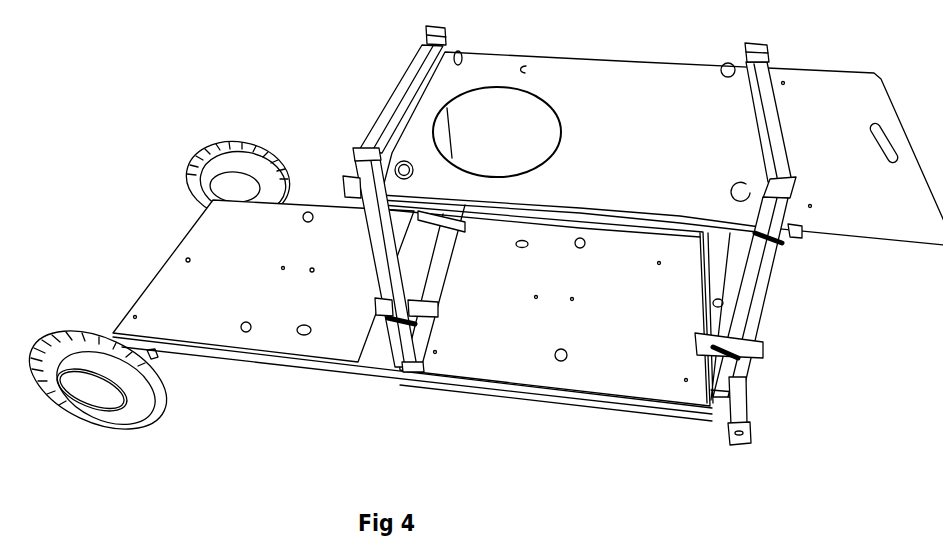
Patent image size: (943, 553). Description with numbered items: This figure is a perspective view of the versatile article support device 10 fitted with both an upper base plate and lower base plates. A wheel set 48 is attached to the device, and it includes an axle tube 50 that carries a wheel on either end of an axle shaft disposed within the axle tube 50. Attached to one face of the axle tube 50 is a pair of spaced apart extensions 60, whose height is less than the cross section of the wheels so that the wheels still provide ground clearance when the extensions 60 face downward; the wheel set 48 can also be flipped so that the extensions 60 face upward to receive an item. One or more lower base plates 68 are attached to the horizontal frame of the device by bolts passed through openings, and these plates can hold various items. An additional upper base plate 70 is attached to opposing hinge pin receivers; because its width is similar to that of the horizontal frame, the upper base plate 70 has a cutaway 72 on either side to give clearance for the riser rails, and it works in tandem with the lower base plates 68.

The versatile article support device 10 is at (412, 408).
The wheel set 48 is at (185, 175).
The axle tube 50 is at (742, 412).
The extensions 60 is at (727, 437).
The base plate 68 is at (218, 322).
The base plate 70 is at (644, 96).
The cutaway 72 is at (797, 238).